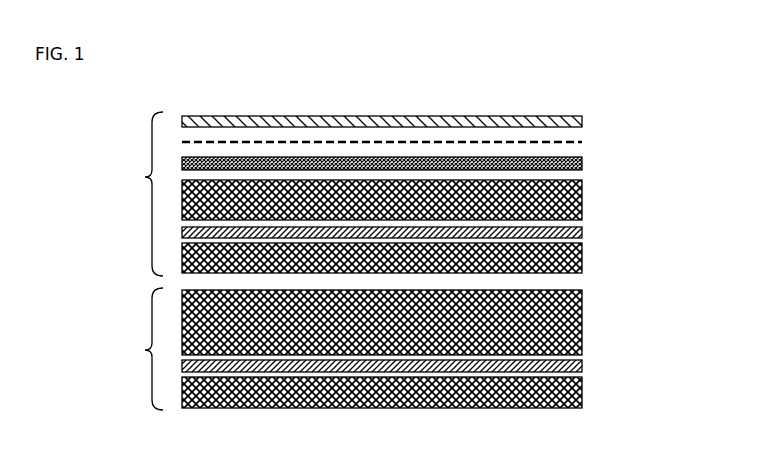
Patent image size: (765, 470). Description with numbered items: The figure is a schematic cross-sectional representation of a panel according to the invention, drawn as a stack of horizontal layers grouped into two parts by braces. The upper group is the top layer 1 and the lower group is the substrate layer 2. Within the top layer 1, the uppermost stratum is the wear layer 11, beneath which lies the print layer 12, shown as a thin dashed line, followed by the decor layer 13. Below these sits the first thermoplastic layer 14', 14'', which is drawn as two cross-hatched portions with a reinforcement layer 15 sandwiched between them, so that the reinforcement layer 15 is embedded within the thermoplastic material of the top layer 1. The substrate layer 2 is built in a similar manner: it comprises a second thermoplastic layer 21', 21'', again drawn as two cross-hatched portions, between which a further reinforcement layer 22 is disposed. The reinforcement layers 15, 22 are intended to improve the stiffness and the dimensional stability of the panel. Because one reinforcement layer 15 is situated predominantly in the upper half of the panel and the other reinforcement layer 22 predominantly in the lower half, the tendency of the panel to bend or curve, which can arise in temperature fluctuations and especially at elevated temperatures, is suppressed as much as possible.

The top layer 1 is at (145, 177).
The substrate layer 2 is at (145, 350).
The wear layer 11 is at (582, 122).
The print layer 12 is at (582, 142).
The decor layer 13 is at (582, 164).
The first thermoplastic layer 14' is at (426, 198).
The reinforcement layer 15 is at (582, 232).
The first thermoplastic layer 14'' is at (429, 254).
The second thermoplastic layer 21' is at (426, 322).
The reinforcement layer 22 is at (582, 366).
The second thermoplastic layer 21'' is at (429, 396).